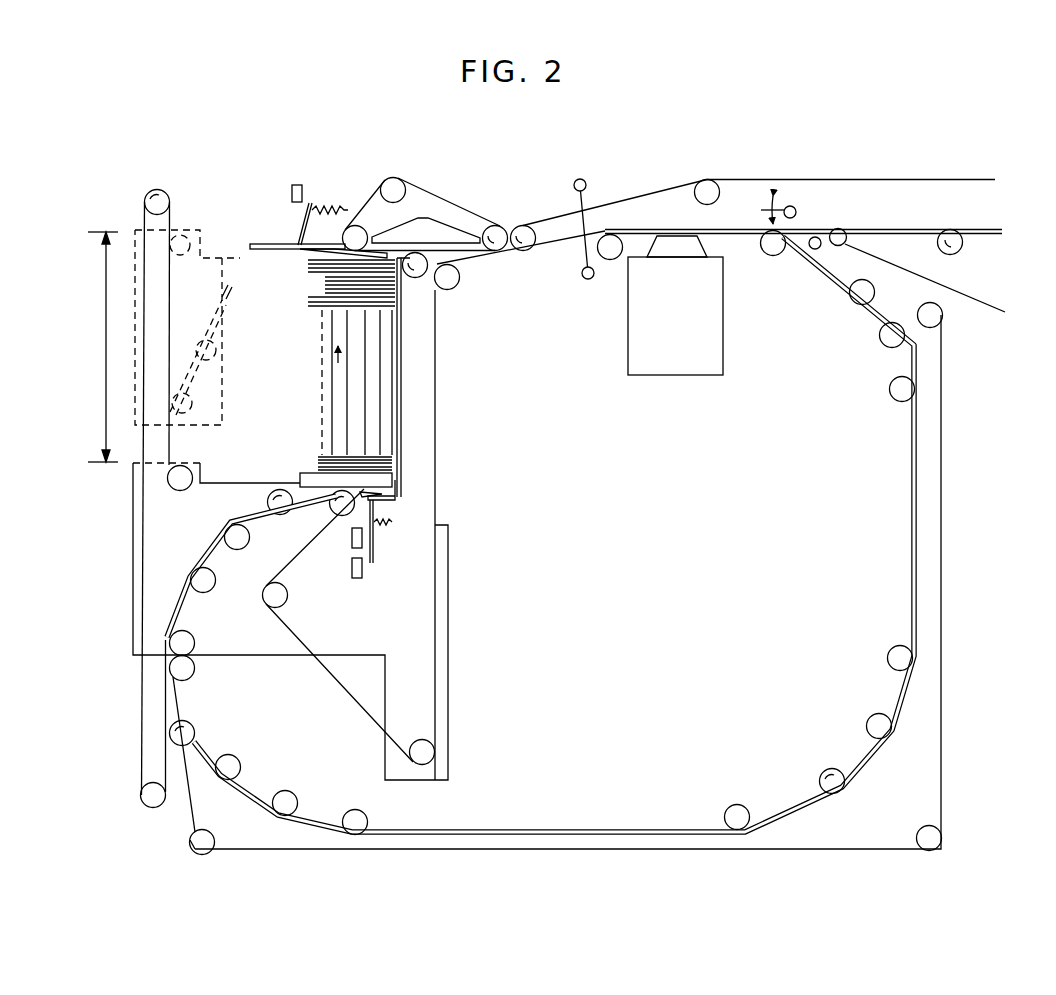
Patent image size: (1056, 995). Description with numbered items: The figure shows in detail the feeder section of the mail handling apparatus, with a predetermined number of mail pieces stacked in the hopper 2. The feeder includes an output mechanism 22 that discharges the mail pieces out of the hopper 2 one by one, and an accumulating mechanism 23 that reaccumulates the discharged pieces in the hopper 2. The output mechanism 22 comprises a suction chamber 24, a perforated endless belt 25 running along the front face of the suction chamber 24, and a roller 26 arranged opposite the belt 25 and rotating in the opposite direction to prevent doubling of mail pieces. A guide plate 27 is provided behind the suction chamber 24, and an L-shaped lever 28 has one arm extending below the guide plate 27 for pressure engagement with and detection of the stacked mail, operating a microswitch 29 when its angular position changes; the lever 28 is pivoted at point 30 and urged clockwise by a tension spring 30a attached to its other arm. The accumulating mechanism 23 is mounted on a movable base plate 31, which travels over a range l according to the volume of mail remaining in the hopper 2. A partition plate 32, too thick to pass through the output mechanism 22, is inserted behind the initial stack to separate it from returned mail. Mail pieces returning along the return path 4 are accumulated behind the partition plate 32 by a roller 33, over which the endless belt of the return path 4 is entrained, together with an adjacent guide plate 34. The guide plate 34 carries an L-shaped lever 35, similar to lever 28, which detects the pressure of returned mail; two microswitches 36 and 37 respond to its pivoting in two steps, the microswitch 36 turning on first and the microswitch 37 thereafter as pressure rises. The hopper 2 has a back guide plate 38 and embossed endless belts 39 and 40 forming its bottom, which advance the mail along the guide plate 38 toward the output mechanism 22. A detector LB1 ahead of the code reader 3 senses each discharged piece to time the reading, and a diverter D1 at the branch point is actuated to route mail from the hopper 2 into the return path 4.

The hopper 2 is at (321, 407).
The code reader 3 is at (725, 332).
The return path 4 is at (566, 830).
The output mechanism 22 is at (391, 160).
The accumulating mechanism 23 is at (403, 608).
The suction chamber 24 is at (462, 228).
The perforated endless belt 25 is at (438, 198).
The roller 26 is at (415, 280).
The guide plate 27 is at (252, 243).
The L-shaped lever 28 is at (302, 238).
The microswitch 29 is at (299, 184).
The pivot point 30 is at (298, 250).
The tension spring 30a is at (332, 206).
The movable base plate 31 is at (452, 660).
The partition plate 32 is at (300, 476).
The roller 33 is at (332, 516).
The guide plate 34 is at (395, 499).
The L-shaped lever 35 is at (381, 548).
The microswitch 36 is at (352, 540).
The microswitch 37 is at (352, 574).
The back guide plate 38 is at (403, 386).
The embossed endless belt 39 is at (383, 434).
The embossed endless belt 40 is at (348, 418).
The detector LB1 is at (586, 280).
The diverter D1 is at (789, 206).
The range of movement l is at (98, 347).